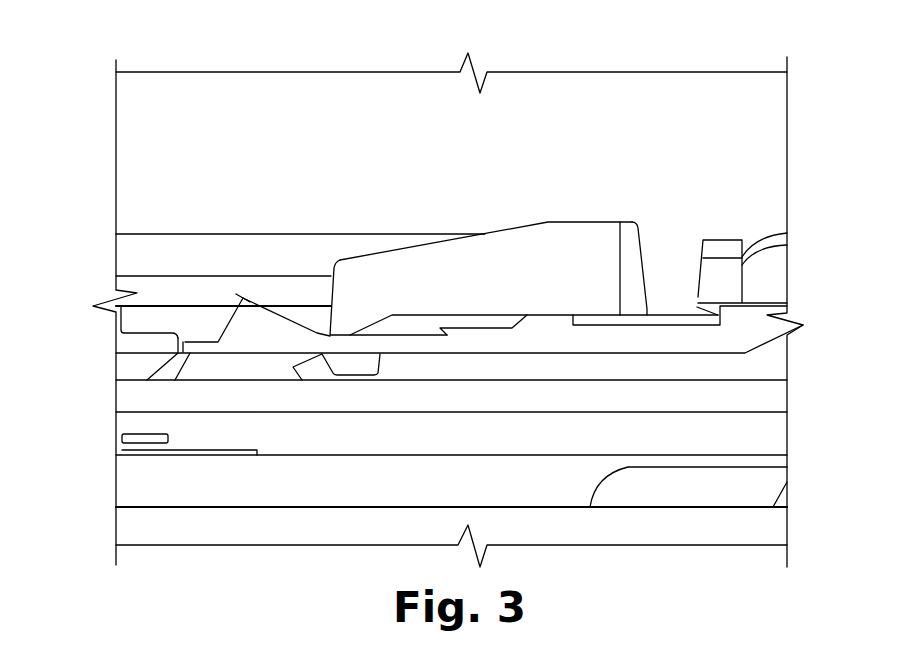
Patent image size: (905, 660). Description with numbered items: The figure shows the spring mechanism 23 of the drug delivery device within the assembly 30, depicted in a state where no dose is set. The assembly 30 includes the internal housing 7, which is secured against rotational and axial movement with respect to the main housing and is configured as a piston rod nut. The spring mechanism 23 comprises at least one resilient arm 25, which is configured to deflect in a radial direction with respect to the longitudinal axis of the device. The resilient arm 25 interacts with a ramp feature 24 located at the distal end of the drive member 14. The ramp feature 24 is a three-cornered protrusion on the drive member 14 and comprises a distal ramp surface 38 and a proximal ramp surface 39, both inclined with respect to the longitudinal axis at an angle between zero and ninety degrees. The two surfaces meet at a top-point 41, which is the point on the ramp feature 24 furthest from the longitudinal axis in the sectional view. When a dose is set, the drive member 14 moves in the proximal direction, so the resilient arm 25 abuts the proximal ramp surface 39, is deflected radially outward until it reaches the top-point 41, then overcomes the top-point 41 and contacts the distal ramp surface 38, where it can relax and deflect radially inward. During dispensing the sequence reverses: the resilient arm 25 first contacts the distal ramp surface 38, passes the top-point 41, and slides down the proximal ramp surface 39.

The internal housing 7 is at (130, 258).
The drive member 14 is at (620, 222).
The spring mechanism 23 is at (432, 214).
The ramp feature 24 is at (247, 322).
The resilient arm 25 is at (382, 275).
The assembly 30 is at (680, 58).
The distal ramp surface 38 is at (230, 310).
The proximal ramp surface 39 is at (267, 307).
The top-point 41 is at (243, 298).